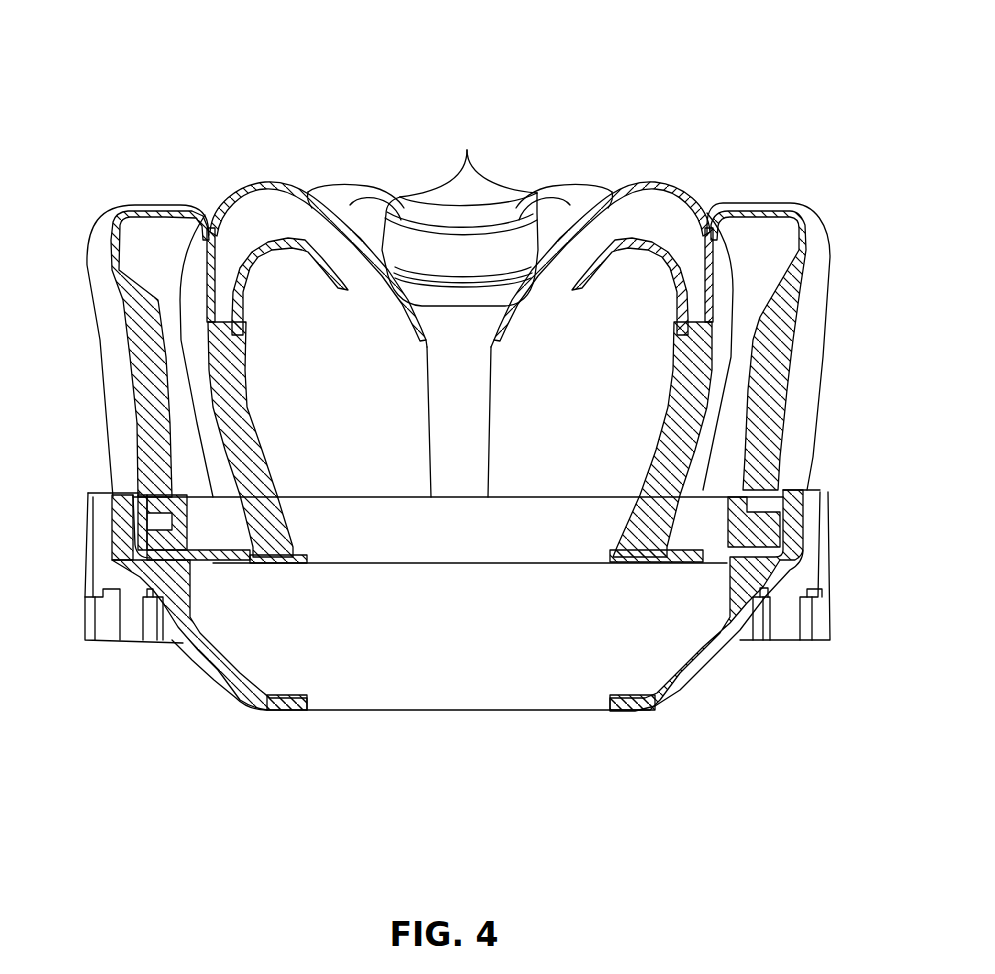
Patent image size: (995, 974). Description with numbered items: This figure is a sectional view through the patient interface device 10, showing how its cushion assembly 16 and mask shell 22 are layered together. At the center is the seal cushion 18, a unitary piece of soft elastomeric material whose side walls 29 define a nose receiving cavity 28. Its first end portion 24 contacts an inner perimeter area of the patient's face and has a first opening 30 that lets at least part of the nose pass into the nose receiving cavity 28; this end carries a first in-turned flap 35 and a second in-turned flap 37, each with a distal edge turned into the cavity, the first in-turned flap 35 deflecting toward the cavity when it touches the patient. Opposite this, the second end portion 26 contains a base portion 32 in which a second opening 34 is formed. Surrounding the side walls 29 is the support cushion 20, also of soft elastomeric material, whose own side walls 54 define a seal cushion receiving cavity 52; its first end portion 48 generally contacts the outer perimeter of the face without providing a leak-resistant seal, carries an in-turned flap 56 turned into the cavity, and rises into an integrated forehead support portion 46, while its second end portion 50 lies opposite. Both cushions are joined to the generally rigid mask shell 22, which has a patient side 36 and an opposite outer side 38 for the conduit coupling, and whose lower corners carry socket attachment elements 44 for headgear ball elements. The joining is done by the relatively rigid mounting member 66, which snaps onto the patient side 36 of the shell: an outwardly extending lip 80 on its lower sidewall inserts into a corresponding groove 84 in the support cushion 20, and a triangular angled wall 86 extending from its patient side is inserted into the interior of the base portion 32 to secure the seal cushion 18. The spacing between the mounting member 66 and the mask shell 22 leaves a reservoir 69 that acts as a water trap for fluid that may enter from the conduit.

The patient interface device 10 is at (707, 90).
The cushion assembly 16 is at (150, 140).
The seal cushion 18 is at (697, 200).
The support cushion 20 is at (820, 220).
The mask shell 22 is at (660, 700).
The first end portion 24 is at (272, 182).
The second end portion 26 is at (180, 653).
The nose receiving cavity 28 is at (300, 344).
The side walls 29 is at (245, 400).
The first opening 30 is at (498, 345).
The base portion 32 is at (193, 650).
The second opening 34 is at (333, 567).
The first in-turned flap 35 is at (467, 150).
The patient side 36 is at (685, 655).
The second in-turned flap 37 is at (345, 288).
The outer side 38 is at (617, 714).
The socket attachment elements 44 is at (130, 627).
The forehead support portion 46 is at (365, 190).
The first end portion 48 is at (775, 208).
The second end portion 50 is at (140, 510).
The seal cushion receiving cavity 52 is at (185, 468).
The side walls 54 is at (130, 372).
The in-turned flap 56 is at (207, 222).
The mounting member 66 is at (683, 567).
The reservoir 69 is at (277, 645).
The outwardly extending lip 80 is at (769, 520).
The groove 84 is at (180, 562).
The angled wall 86 is at (645, 478).